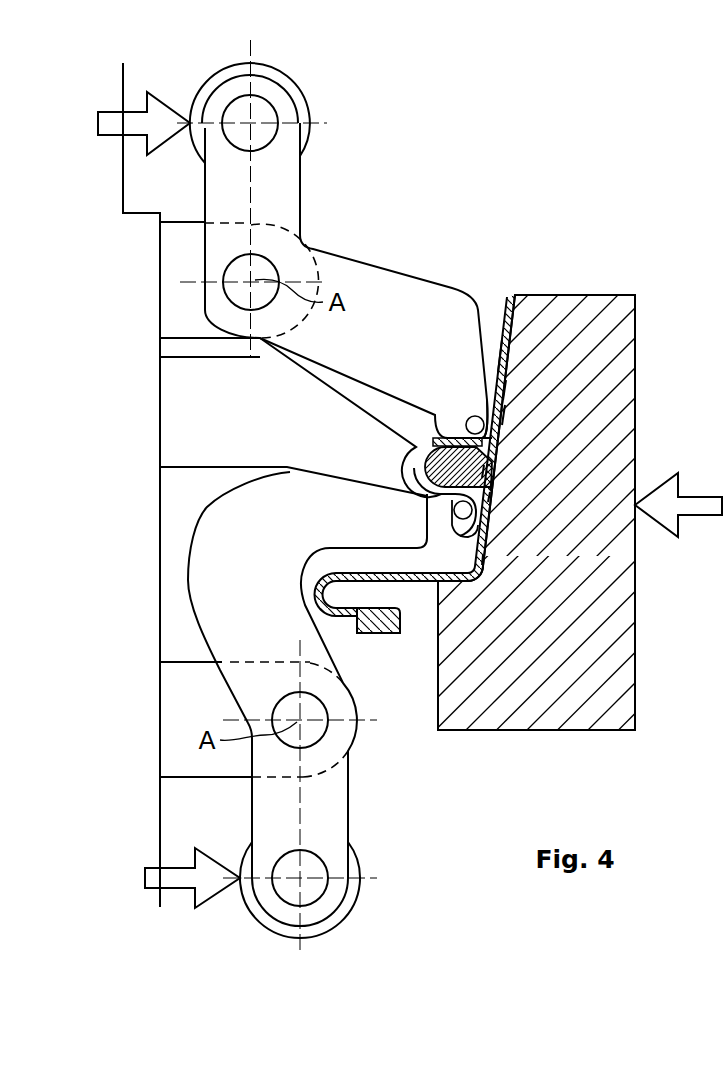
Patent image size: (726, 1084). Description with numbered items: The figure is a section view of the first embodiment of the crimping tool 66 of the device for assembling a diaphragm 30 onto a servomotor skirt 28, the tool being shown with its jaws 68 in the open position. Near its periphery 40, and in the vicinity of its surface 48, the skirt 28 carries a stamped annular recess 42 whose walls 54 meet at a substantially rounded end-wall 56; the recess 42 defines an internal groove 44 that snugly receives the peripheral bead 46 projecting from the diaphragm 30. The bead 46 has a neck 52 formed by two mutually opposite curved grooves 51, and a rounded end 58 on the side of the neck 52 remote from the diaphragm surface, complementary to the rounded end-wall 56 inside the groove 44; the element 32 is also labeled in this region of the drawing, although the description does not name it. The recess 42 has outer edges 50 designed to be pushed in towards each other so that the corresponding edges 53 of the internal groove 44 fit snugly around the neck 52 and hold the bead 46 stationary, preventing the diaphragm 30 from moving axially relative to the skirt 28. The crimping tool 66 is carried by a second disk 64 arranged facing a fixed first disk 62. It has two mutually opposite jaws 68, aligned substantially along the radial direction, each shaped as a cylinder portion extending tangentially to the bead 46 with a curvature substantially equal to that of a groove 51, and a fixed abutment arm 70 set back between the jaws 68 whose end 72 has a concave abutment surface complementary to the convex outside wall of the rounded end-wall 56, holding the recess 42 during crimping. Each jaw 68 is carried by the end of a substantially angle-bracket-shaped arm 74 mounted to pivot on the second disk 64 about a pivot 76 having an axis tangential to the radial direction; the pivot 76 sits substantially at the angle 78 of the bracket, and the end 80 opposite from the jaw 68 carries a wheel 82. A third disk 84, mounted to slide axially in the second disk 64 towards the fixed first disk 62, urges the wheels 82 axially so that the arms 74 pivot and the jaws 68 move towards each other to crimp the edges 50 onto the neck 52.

The skirt 28 is at (509, 302).
The diaphragm 30 is at (525, 366).
The striker plate portion 32 is at (517, 390).
The periphery 40 is at (425, 562).
The stamped annular recess 42 is at (414, 432).
The internal groove 44 is at (485, 462).
The peripheral bead 46 is at (440, 490).
The surface of the skirt 48 is at (540, 295).
The outer edges 50 is at (466, 418).
The curved grooves 51 is at (487, 485).
The neck 52 is at (490, 495).
The edges of the internal groove 53 is at (493, 437).
The walls of the recess 54 is at (428, 433).
The rounded end-wall 56 is at (413, 466).
The rounded end 58 is at (440, 488).
The first disk 62 is at (600, 700).
The second disk 64 is at (183, 250).
The peripheral crimping tool 66 is at (340, 176).
The jaws 68 is at (507, 408).
The fixed abutment arm 70 is at (200, 410).
The end of the abutment arm 72 is at (416, 434).
The arm 74 is at (223, 188).
The pivot 76 is at (233, 273).
The angle of the angle bracket 78 is at (228, 296).
The end of the angle bracket 80 is at (303, 99).
The wheel 82 is at (217, 69).
The third disk 84 is at (107, 128).